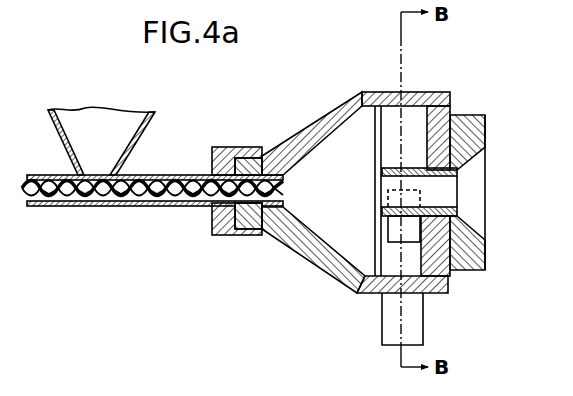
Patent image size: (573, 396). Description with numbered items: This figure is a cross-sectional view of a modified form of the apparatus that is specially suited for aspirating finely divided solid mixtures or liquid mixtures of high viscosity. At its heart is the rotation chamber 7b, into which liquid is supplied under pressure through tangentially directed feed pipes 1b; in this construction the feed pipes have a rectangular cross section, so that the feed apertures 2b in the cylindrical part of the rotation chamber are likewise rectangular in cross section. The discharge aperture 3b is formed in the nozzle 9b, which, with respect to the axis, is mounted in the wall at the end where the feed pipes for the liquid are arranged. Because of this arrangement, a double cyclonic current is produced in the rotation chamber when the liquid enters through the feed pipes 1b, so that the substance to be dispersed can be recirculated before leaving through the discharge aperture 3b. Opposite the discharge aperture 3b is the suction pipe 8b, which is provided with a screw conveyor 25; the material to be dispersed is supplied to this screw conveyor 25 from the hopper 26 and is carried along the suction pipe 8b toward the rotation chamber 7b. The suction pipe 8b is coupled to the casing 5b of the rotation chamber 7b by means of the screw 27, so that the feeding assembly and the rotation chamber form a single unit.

The feed pipe 1b is at (415, 327).
The feed aperture 2b is at (415, 233).
The discharge aperture 3b is at (472, 195).
The casing 5b is at (327, 257).
The rotation chamber 7b is at (325, 158).
The suction pipe 8b is at (145, 207).
The nozzle 9b is at (473, 140).
The screw conveyor 25 is at (153, 177).
The hopper 26 is at (138, 133).
The screw 27 is at (234, 232).